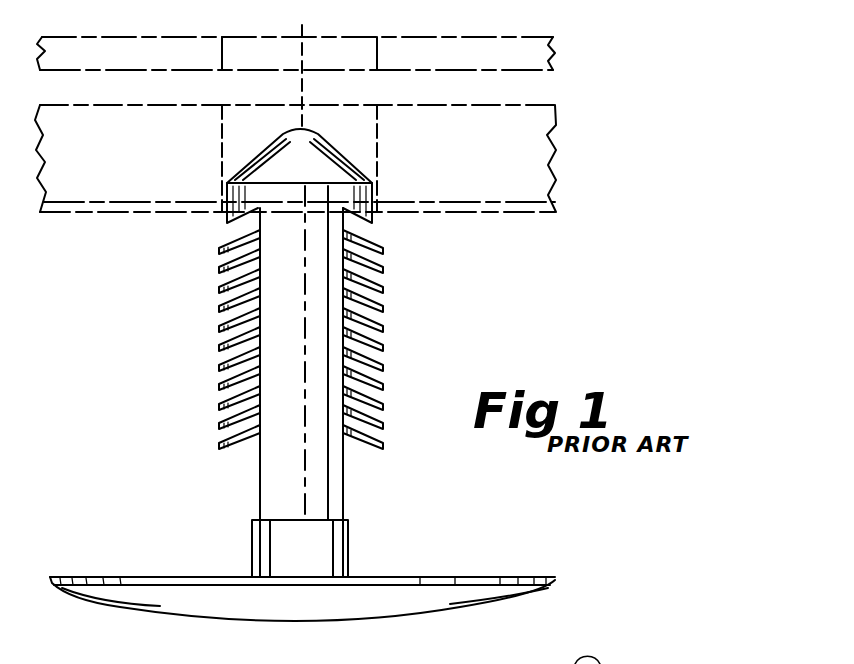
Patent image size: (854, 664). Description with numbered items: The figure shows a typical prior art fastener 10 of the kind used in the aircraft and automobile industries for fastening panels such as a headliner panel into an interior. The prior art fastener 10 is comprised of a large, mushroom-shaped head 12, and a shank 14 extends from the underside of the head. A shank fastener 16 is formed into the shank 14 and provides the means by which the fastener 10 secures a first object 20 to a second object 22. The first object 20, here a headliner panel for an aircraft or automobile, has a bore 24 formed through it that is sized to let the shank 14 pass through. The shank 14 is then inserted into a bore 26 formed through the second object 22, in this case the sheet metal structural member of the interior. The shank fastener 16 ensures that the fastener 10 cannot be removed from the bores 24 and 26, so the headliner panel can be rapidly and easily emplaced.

The prior art fastener 10 is at (302, 396).
The mushroom-shaped head 12 is at (187, 621).
The shank 14 is at (258, 482).
The shank fastener 16 is at (205, 353).
The first object 20 is at (546, 212).
The second object 22 is at (550, 37).
The bore 24 is at (367, 106).
The bore 26 is at (362, 38).